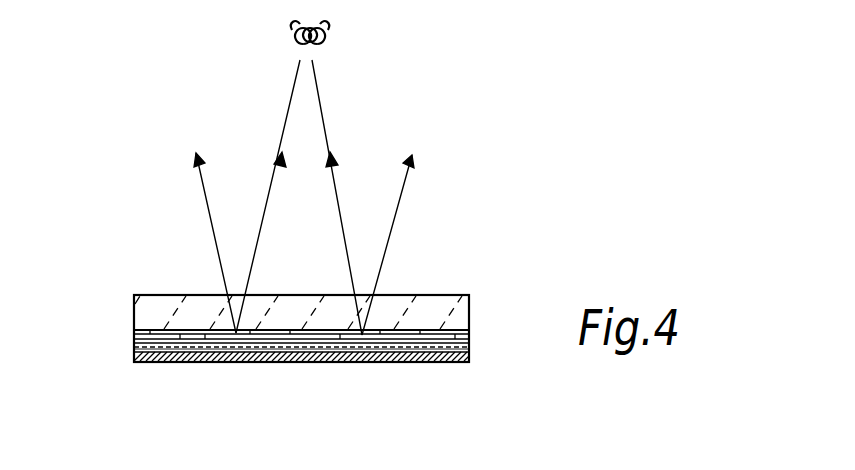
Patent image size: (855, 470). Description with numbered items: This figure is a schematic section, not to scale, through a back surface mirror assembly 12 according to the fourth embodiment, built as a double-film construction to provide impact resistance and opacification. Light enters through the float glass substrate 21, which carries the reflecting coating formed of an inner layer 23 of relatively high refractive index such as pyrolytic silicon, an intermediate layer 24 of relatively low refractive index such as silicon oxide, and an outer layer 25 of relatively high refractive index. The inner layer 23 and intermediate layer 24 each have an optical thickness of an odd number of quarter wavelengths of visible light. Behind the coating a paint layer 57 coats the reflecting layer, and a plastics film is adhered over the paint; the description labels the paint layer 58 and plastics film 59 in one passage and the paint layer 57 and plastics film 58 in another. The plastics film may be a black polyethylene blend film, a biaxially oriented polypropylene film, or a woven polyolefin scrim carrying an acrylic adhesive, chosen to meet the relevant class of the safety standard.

The display panel 12 is at (133, 338).
The float glass substrate 21 is at (436, 305).
The inner layer 23 is at (152, 340).
The intermediate layer 24 is at (207, 344).
The outer layer 25 is at (392, 348).
The paint layer 57 is at (440, 353).
The plastics film 58 is at (470, 347).
The plastics film 59 is at (470, 358).